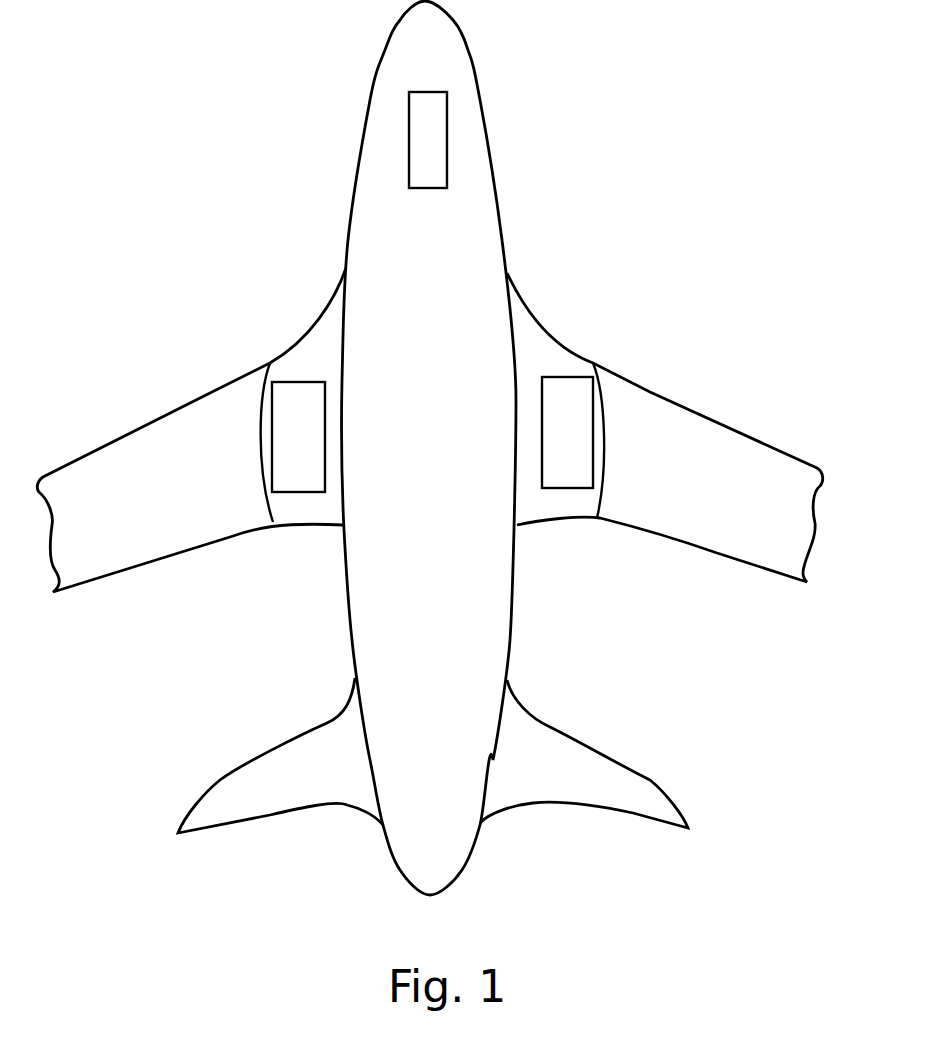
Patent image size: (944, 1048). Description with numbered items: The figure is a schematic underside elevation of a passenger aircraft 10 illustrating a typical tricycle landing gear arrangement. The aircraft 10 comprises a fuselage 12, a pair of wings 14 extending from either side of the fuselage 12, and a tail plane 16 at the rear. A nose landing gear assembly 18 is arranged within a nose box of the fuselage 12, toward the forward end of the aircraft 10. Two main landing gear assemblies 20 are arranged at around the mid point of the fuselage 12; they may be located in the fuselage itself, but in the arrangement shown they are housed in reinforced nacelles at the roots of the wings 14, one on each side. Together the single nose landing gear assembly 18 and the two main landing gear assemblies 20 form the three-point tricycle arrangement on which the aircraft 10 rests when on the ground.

The aircraft 10 is at (429, 448).
The fuselage 12 is at (502, 220).
The wings 14 is at (212, 392).
The tail plane 16 is at (293, 813).
The nose landing gear assembly 18 is at (425, 188).
The main landing gear assembly 20 is at (300, 492).